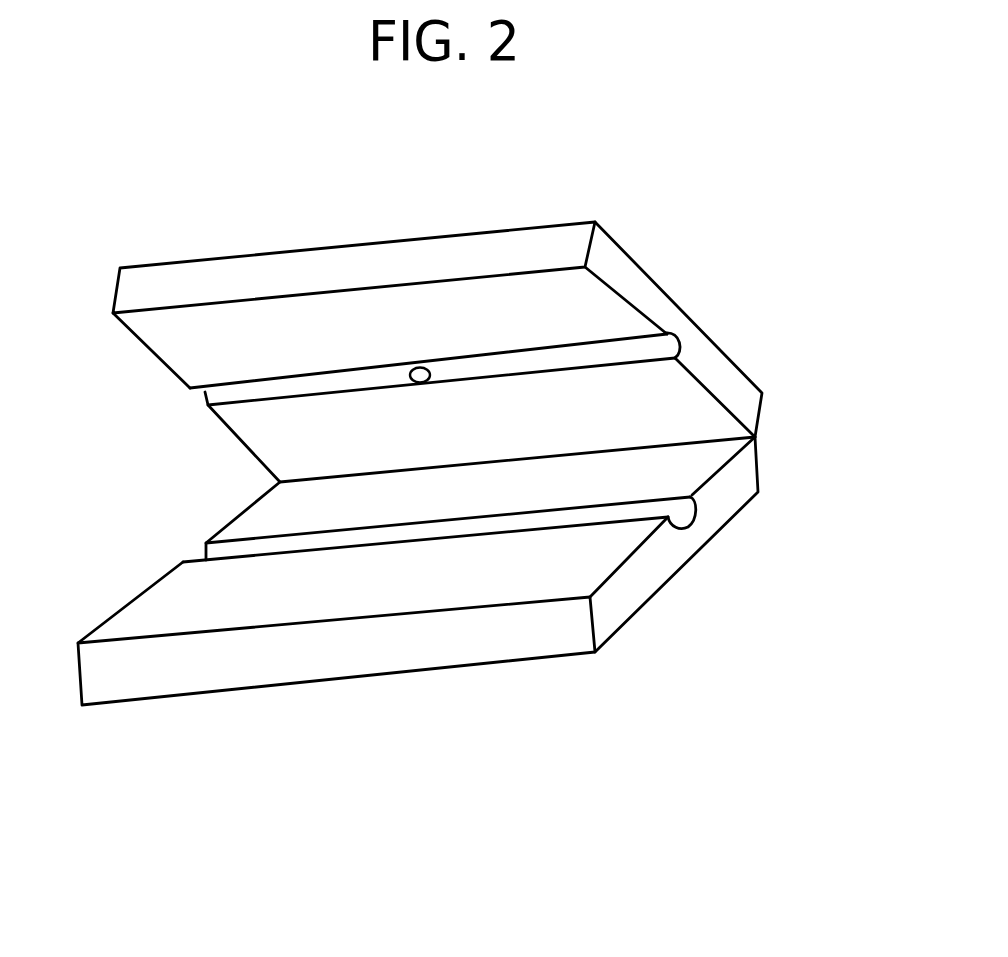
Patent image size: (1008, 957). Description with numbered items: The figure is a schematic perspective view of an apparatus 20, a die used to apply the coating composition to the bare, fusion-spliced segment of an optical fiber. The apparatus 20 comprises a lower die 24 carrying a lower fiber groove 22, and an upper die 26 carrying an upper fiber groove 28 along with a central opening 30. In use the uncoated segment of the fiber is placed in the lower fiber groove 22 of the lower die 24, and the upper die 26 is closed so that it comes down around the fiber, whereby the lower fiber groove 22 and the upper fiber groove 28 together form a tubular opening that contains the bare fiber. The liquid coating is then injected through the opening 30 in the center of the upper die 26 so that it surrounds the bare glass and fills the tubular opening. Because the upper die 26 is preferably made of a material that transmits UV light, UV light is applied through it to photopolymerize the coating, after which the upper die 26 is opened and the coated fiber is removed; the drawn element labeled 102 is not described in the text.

The apparatus 20 is at (573, 183).
The lower fiber groove 22 is at (693, 520).
The lower die 24 is at (300, 697).
The upper die 26 is at (218, 243).
The upper fiber groove 28 is at (680, 327).
The opening 30 is at (413, 353).
The intermediate web 102 is at (772, 433).